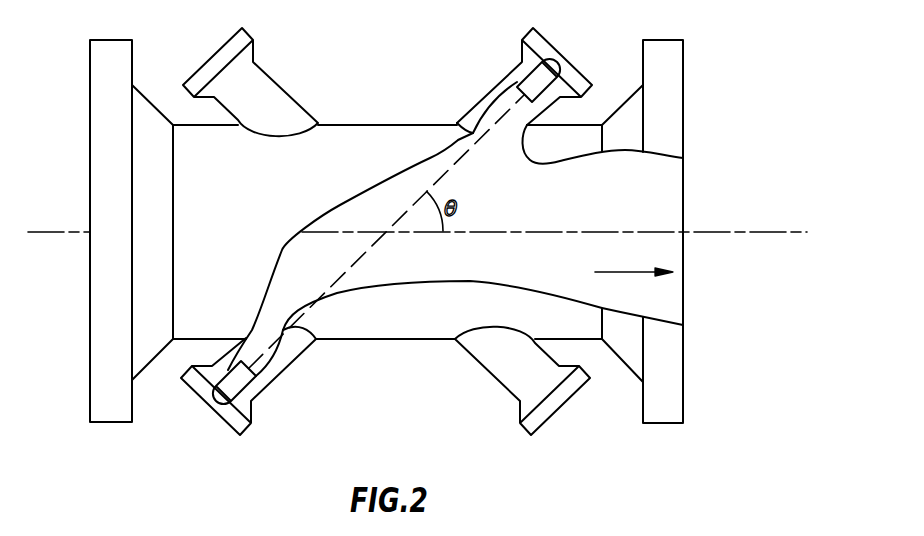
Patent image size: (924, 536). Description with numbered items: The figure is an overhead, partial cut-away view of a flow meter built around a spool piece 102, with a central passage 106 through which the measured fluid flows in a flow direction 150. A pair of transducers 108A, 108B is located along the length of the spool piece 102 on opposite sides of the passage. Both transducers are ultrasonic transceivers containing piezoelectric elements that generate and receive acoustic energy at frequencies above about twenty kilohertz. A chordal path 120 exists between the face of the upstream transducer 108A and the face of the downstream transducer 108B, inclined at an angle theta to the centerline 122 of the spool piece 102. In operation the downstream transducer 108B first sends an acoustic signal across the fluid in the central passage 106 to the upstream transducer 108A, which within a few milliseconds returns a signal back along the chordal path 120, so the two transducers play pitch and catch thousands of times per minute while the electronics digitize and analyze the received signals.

The spool piece 102 is at (378, 125).
The central passage 106 is at (631, 203).
The upstream transducer 108A is at (252, 388).
The downstream transducer 108B is at (520, 62).
The chordal path 120 is at (358, 262).
The centerline 122 is at (753, 231).
The flow direction 150 is at (645, 270).